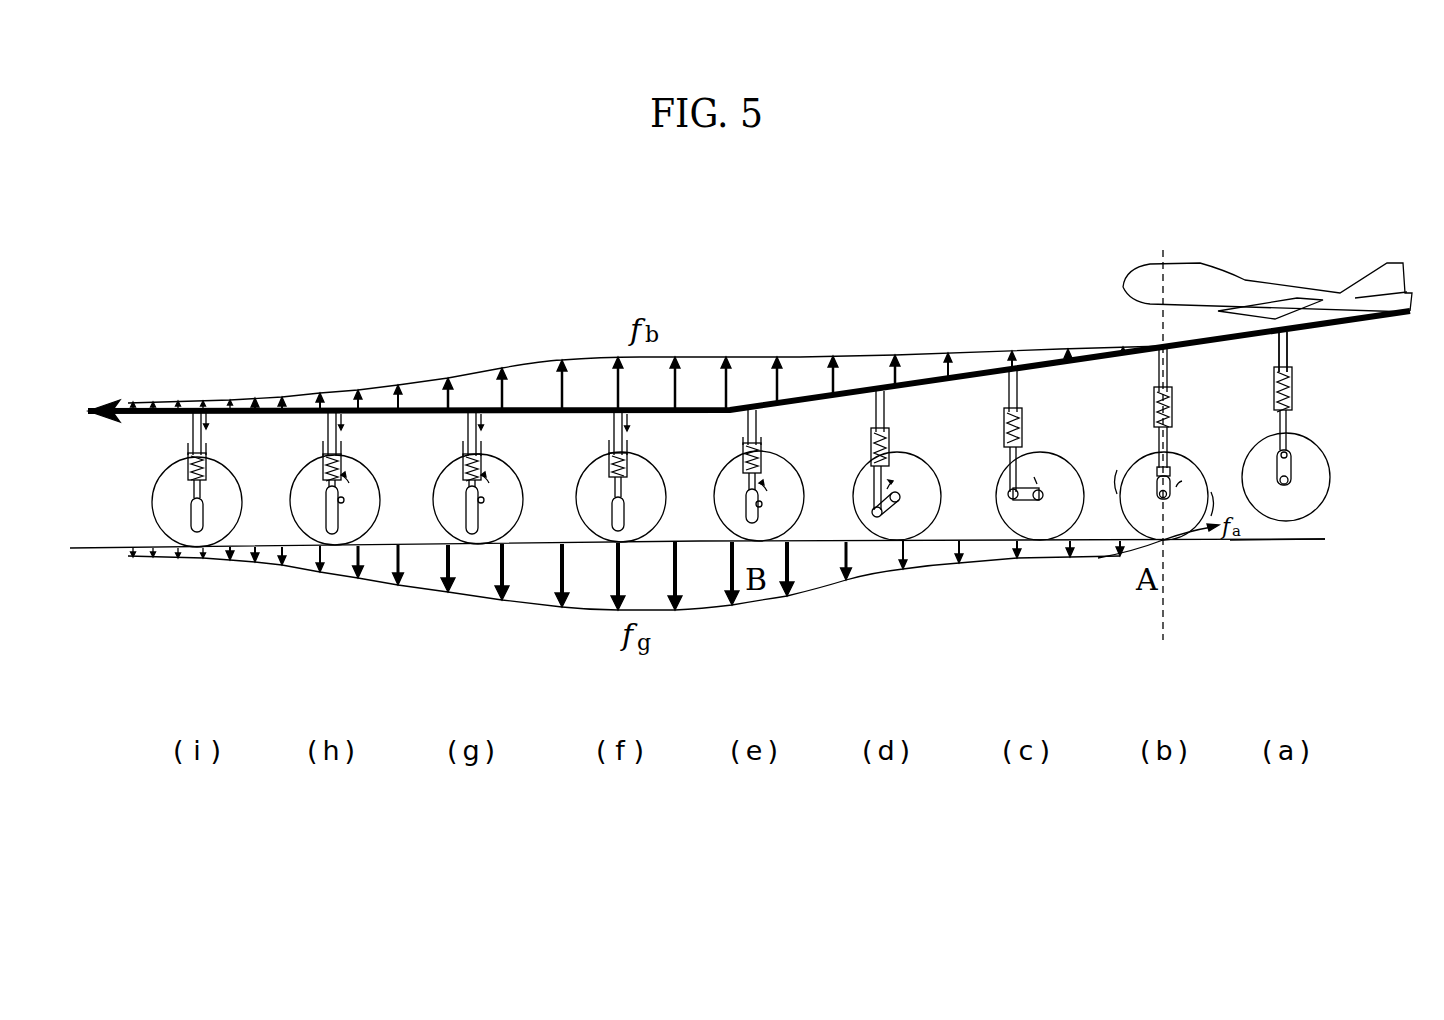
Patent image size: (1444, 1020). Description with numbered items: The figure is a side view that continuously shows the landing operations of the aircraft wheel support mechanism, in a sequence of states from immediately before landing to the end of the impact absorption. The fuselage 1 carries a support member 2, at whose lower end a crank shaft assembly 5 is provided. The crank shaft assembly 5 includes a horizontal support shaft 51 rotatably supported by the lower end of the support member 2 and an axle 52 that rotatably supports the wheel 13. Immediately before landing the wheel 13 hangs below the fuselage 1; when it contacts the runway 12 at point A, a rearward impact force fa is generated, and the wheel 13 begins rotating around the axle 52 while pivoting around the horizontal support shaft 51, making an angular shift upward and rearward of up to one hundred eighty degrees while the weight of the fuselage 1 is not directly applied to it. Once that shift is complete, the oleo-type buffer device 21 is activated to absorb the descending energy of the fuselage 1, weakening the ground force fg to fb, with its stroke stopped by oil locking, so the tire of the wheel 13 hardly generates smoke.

The fuselage 1 is at (1266, 283).
The support member 2 is at (1289, 353).
The oleo-type buffer device 21 is at (762, 447).
The crank shaft assembly 5 is at (1294, 468).
The horizontal support shaft 51 is at (1291, 455).
The axle 52 is at (1288, 482).
The wheel 13 is at (1186, 468).
The runway 12 is at (1262, 540).